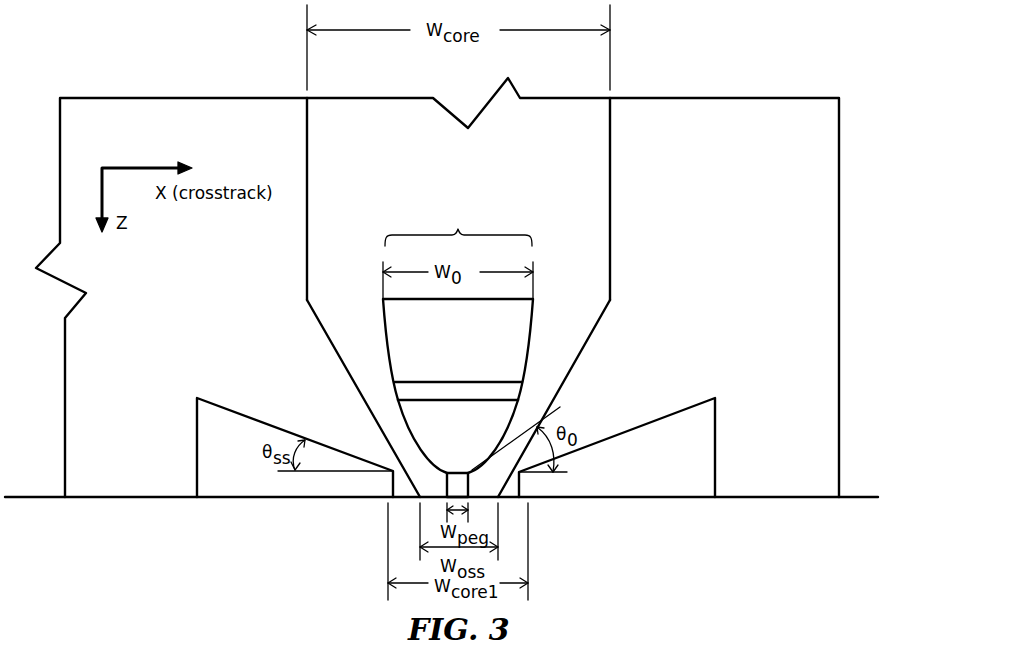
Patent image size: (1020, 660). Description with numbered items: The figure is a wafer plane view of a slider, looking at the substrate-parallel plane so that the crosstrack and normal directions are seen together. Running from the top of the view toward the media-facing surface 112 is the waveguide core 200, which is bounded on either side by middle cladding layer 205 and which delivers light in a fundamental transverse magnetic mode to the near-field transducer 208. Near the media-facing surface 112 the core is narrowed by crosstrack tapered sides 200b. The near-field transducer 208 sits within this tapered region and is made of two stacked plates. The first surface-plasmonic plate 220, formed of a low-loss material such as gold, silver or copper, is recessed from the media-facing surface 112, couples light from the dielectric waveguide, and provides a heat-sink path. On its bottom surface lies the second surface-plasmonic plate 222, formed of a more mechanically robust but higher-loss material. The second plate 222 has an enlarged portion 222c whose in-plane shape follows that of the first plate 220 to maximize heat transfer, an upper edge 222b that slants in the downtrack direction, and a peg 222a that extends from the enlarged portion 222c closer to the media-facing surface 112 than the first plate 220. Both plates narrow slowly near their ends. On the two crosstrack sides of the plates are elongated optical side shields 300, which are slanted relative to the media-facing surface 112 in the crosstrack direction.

The media-facing surface 112 is at (850, 500).
The waveguide core 200 is at (357, 109).
The crosstrack tapered sides 200b is at (352, 382).
The middle cladding layer 205 is at (205, 107).
The near-field transducer 208 is at (458, 225).
The first surface-plasmonic plate 220 is at (530, 342).
The second surface-plasmonic plate 222 is at (400, 402).
The peg 222a is at (468, 488).
The upper edge 222b is at (403, 392).
The enlarged portion 222c is at (433, 437).
The optical side shields 300 is at (232, 409).